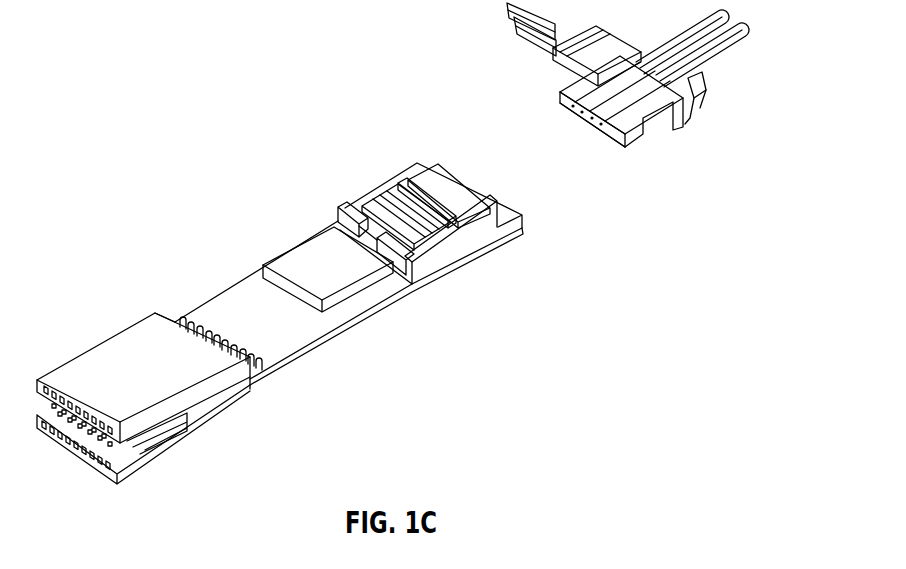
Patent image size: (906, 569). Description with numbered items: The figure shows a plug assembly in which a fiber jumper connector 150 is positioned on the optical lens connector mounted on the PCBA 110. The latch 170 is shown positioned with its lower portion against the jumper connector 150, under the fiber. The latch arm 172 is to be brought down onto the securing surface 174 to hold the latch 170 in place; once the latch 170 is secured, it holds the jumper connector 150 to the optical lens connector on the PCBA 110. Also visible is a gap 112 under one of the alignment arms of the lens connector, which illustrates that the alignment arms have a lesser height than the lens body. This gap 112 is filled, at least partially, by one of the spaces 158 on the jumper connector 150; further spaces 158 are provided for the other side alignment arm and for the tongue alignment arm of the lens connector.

The PCBA 110 is at (305, 348).
The gap 112 is at (494, 232).
The jumper connector 150 is at (536, 127).
The spaces 158 is at (615, 128).
The latch 170 is at (691, 97).
The latch arm 172 is at (515, 36).
The securing surface 174 is at (326, 220).